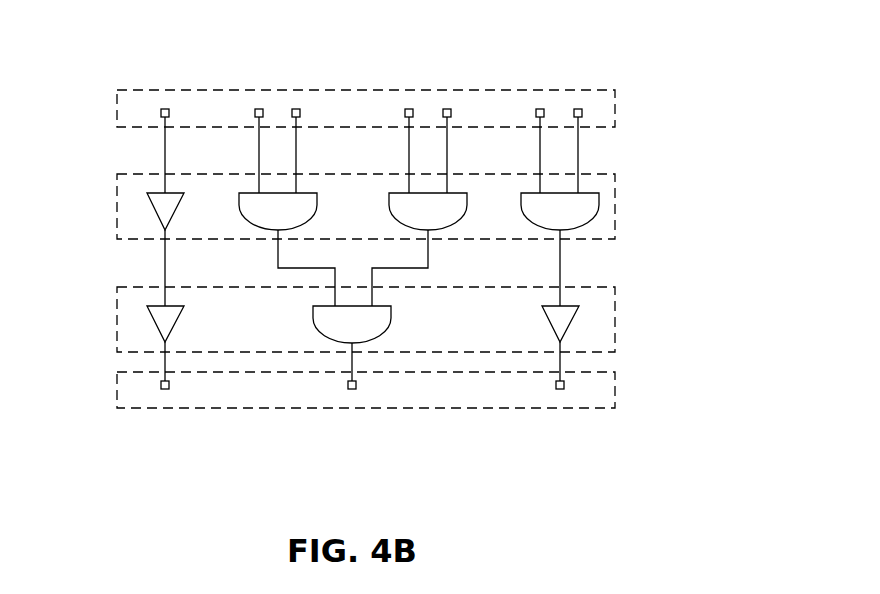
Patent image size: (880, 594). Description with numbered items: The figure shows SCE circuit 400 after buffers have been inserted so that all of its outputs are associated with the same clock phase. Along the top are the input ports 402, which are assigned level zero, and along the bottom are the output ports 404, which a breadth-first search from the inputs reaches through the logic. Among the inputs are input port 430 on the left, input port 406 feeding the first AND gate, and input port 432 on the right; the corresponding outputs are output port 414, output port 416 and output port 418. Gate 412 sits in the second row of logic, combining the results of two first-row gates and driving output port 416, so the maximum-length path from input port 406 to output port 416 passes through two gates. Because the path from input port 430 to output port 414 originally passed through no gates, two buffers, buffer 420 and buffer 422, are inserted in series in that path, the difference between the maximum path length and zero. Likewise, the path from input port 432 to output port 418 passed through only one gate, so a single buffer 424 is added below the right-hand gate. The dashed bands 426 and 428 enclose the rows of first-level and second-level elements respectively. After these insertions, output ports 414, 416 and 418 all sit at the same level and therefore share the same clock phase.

The SCE circuit 400 is at (738, 52).
The input ports 402 is at (117, 112).
The output ports 404 is at (615, 398).
The input port 406 is at (295, 107).
The gate 412 is at (388, 322).
The output port 414 is at (163, 391).
The output port 416 is at (350, 391).
The output port 418 is at (558, 391).
The buffer 420 is at (156, 203).
The buffer 422 is at (156, 320).
The buffer 424 is at (571, 323).
The first logic layer 426 is at (615, 212).
The second logic layer 428 is at (615, 305).
The input port 430 is at (164, 107).
The input port 432 is at (539, 107).